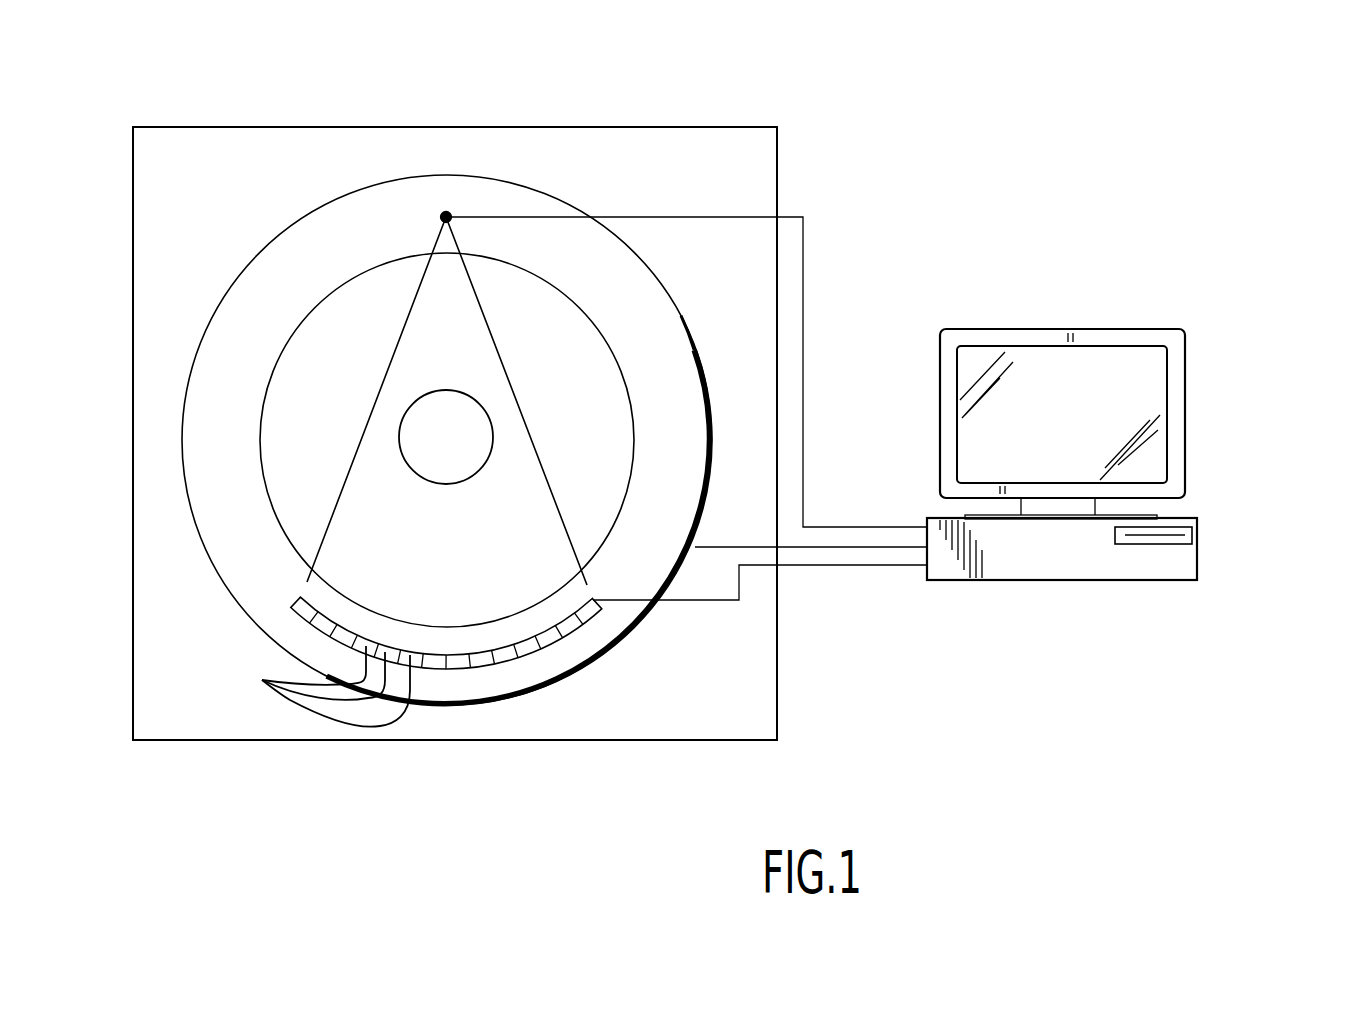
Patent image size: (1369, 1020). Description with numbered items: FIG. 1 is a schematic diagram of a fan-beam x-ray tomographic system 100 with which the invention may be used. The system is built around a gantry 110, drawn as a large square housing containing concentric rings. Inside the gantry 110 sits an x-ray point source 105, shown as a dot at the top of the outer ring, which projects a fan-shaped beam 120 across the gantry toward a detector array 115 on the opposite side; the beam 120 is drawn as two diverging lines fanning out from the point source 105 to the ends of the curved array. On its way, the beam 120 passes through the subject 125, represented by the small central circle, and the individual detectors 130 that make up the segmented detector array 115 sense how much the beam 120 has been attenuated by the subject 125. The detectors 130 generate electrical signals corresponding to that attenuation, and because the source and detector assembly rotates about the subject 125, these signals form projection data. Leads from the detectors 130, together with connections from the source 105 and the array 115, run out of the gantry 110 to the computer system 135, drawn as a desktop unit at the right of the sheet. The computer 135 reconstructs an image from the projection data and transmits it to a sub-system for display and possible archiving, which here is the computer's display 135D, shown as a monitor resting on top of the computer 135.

The x-ray tomographic system 100 is at (903, 157).
The x-ray point source 105 is at (446, 213).
The gantry 110 is at (278, 127).
The detector array 115 is at (596, 610).
The beam 120 is at (531, 438).
The subject 125 is at (428, 390).
The individual detectors 130 is at (311, 686).
The computer system 135 is at (1197, 552).
The computer's display 135D is at (1033, 345).